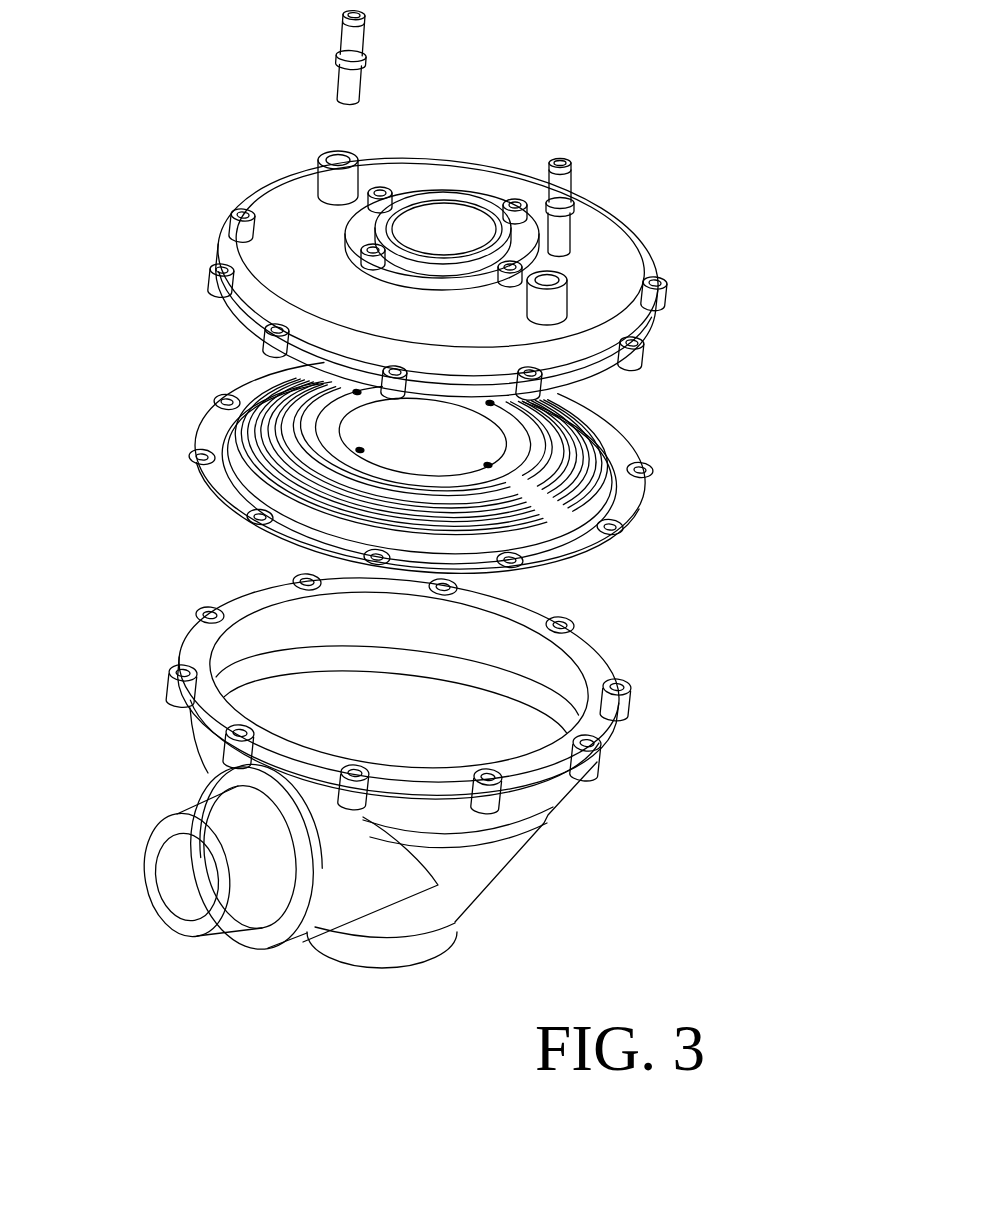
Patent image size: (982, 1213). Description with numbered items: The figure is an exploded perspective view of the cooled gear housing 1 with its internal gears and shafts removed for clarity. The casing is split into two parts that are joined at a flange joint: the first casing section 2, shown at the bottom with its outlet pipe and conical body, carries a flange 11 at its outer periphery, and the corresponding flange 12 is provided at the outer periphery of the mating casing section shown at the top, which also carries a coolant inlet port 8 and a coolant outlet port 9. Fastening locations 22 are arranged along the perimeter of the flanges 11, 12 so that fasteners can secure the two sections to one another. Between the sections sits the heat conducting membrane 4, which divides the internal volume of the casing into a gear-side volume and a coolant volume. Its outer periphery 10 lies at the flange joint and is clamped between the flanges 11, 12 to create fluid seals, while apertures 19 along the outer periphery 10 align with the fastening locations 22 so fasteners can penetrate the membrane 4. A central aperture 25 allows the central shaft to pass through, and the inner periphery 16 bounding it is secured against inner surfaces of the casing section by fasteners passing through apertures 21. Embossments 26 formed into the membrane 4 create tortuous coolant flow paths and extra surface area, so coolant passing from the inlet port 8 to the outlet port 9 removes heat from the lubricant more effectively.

The cooled gear housing 1 is at (730, 146).
The first casing section 2 is at (553, 803).
The heat conducting membrane 4 is at (613, 436).
The coolant inlet port 8 is at (361, 31).
The coolant outlet port 9 is at (563, 157).
The outer periphery 10 is at (645, 488).
The flange 11 is at (657, 320).
The flange 12 is at (590, 645).
The inner periphery 16 is at (500, 424).
The apertures 19 is at (201, 449).
The apertures 21 is at (362, 448).
The fastening locations 22 is at (220, 266).
The central aperture 25 is at (352, 415).
The embossments 26 is at (260, 384).